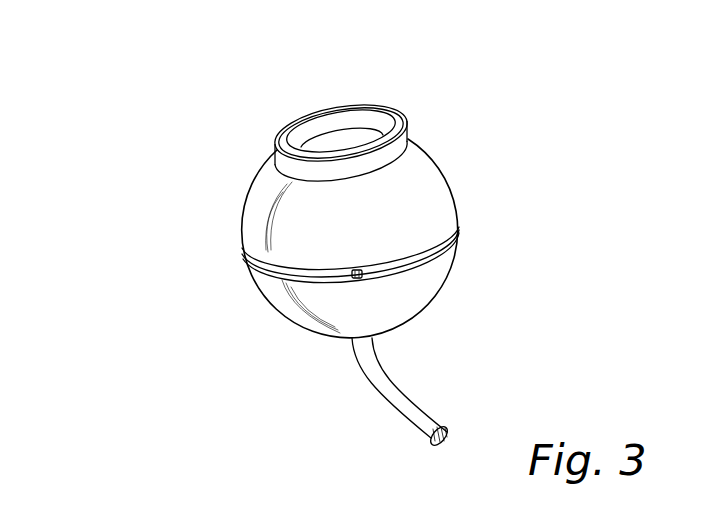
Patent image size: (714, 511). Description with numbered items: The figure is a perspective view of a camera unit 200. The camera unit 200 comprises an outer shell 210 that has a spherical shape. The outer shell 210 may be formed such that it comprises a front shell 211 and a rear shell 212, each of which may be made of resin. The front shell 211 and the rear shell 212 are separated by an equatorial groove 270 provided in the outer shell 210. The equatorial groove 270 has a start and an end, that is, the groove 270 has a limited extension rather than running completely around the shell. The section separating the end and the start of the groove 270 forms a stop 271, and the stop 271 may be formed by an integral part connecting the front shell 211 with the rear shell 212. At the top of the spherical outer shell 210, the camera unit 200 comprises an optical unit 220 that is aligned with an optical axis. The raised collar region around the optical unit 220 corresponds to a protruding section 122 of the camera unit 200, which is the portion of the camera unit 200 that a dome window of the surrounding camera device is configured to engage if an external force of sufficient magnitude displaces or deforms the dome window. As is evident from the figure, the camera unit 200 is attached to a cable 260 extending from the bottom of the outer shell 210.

The camera unit 200 is at (445, 89).
The protruding section 122 is at (394, 108).
The optical unit 220 is at (335, 148).
The outer shell 210 is at (108, 230).
The front shell 211 is at (260, 220).
The rear shell 212 is at (303, 300).
The equatorial groove 270 is at (422, 258).
The stop 271 is at (367, 277).
The cable 260 is at (388, 395).